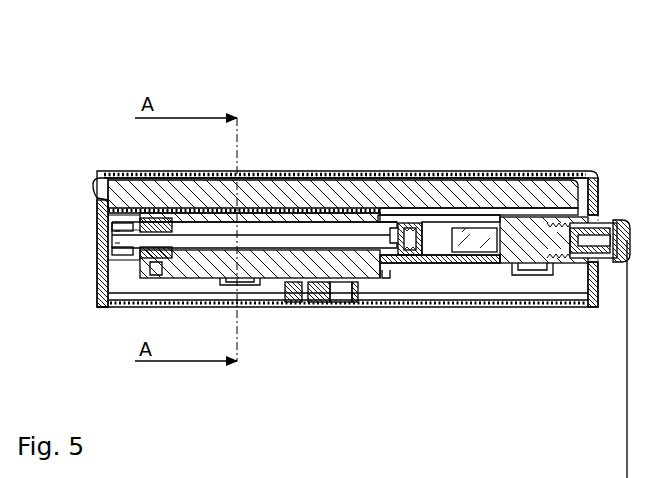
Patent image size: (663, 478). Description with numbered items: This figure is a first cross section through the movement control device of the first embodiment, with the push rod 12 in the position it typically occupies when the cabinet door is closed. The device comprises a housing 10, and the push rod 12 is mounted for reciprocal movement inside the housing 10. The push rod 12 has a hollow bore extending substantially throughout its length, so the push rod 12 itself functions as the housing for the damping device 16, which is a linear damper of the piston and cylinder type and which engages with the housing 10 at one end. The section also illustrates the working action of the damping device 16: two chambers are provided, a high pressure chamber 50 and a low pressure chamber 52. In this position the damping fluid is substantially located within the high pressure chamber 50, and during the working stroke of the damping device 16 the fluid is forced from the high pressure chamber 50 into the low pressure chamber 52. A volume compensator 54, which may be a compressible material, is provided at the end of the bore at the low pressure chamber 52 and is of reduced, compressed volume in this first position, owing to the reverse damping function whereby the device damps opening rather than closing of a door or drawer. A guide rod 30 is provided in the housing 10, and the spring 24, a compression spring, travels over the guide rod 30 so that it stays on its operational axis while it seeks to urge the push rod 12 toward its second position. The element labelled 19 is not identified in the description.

The housing 10 is at (462, 162).
The push rod 12 is at (452, 264).
The damping device 16 is at (318, 240).
The left bearing parts 19 is at (125, 260).
The spring 24 is at (138, 168).
The guide rod 30 is at (368, 196).
The high pressure chamber 50 is at (277, 230).
The low pressure chamber 52 is at (432, 236).
The volume compensator 54 is at (466, 234).